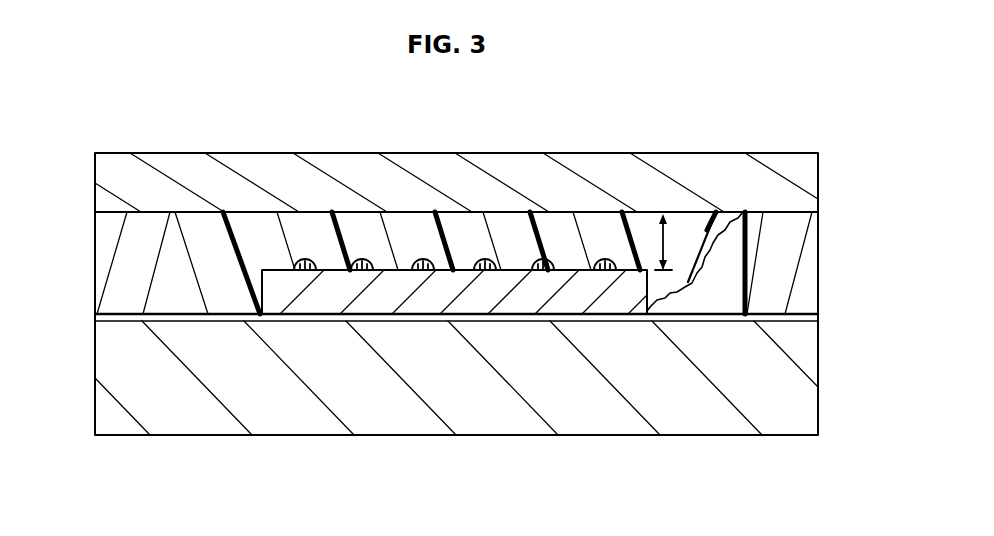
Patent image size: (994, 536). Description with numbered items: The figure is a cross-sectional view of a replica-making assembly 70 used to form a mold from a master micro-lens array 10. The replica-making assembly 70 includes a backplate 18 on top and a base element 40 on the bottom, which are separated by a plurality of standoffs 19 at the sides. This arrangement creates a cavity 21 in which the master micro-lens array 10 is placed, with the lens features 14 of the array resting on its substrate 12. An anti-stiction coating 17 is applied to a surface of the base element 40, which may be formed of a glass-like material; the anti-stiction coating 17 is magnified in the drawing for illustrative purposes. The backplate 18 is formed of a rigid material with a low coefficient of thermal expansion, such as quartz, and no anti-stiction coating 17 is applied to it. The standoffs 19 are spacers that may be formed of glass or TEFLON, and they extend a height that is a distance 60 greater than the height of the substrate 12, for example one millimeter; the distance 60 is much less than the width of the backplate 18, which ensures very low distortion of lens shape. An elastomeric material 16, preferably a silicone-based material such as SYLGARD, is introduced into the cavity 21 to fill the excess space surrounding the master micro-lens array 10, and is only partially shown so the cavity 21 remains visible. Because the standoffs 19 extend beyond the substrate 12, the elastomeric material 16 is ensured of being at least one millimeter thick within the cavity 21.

The replica-making assembly 70 is at (850, 88).
The backplate 18 is at (793, 194).
The base element 40 is at (783, 417).
The anti-stiction coating 17 is at (787, 320).
The substrate 12 is at (273, 298).
The master micro-lens array 10 is at (258, 268).
The standoffs 19 is at (103, 228).
The elastomeric material 16 is at (503, 240).
The bumps 14 is at (290, 262).
The cavity 21 is at (740, 248).
The distance 60 is at (677, 242).